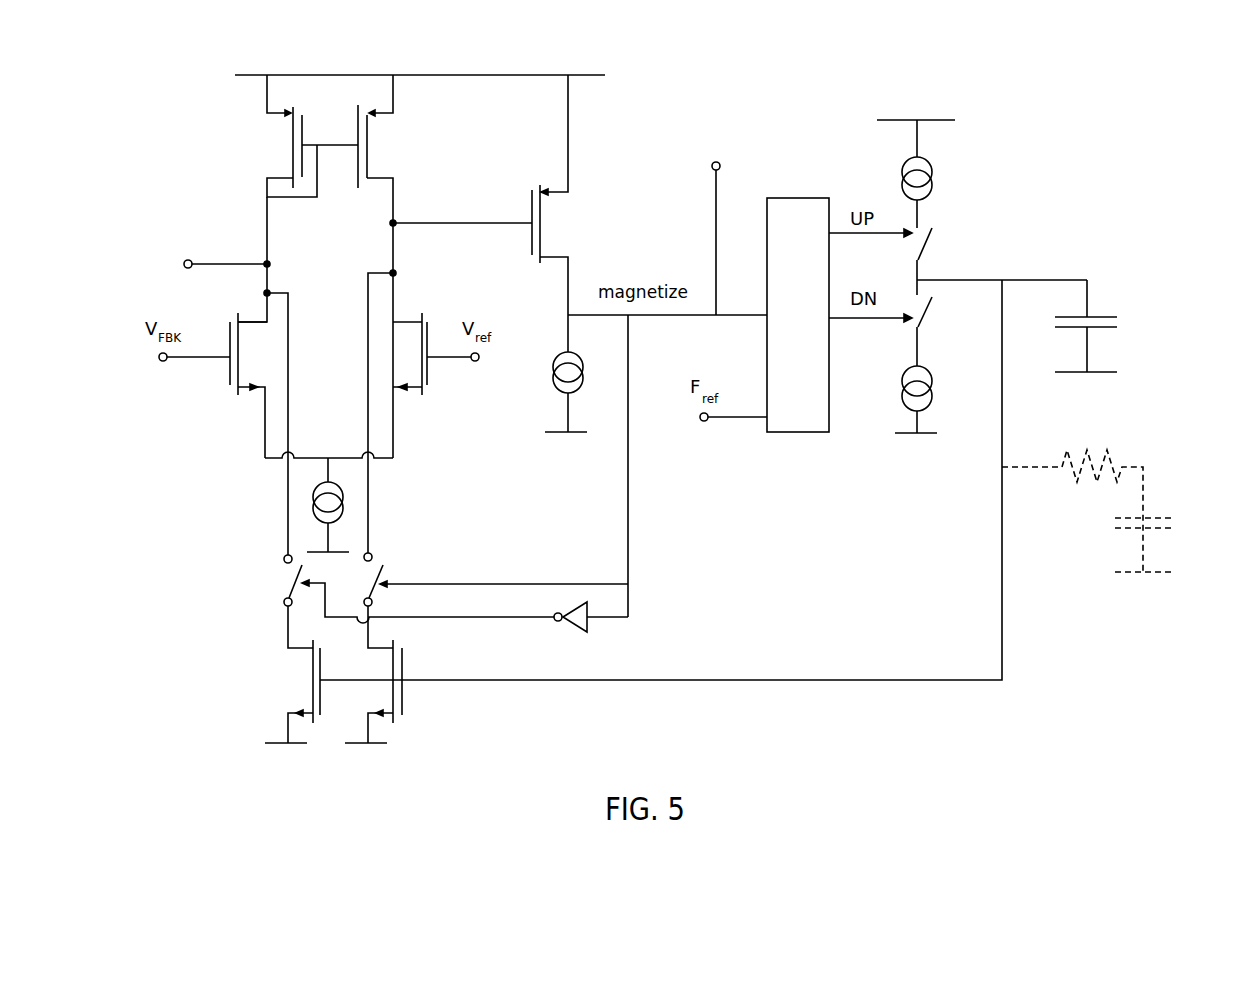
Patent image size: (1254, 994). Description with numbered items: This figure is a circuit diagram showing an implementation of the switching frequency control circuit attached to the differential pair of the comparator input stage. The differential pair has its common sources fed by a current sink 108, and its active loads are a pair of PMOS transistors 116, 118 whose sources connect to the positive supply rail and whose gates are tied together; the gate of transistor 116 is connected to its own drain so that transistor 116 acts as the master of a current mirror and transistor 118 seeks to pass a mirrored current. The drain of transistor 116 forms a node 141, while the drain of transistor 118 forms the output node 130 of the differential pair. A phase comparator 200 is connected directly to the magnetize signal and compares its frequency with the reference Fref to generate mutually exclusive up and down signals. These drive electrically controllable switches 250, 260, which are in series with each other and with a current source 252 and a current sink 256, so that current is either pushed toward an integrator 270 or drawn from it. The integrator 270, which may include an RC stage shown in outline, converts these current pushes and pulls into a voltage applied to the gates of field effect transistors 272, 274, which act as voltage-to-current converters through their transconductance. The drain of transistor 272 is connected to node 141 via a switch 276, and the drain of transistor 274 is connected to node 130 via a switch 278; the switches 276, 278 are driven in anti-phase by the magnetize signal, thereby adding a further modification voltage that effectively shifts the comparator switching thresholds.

The PMOS transistor 116 is at (280, 147).
The PMOS transistor 118 is at (376, 166).
The node 141 is at (269, 291).
The output node 130 is at (395, 272).
The current sink 108 is at (315, 502).
The phase comparator 200 is at (795, 197).
The current source 252 is at (933, 176).
The electrically controllable switch 250 is at (932, 242).
The electrically controllable switch 260 is at (930, 313).
The current sink 256 is at (930, 398).
The integrator 270 is at (1112, 428).
The electrically controllable switch 276 is at (280, 583).
The electrically controllable switch 278 is at (395, 566).
The field effect transistor 272 is at (290, 676).
The field effect transistor 274 is at (404, 693).